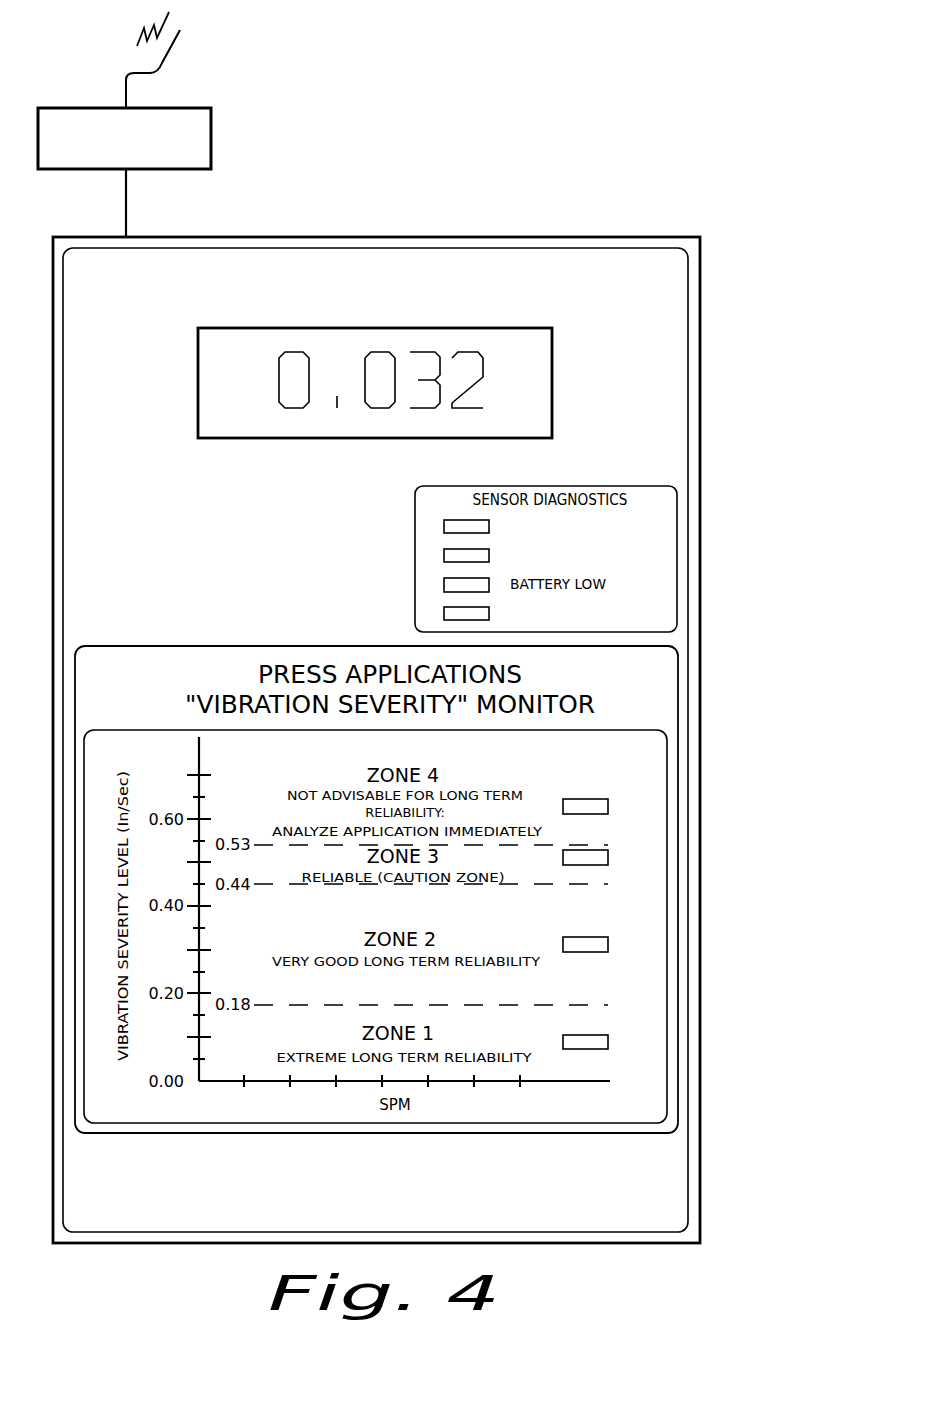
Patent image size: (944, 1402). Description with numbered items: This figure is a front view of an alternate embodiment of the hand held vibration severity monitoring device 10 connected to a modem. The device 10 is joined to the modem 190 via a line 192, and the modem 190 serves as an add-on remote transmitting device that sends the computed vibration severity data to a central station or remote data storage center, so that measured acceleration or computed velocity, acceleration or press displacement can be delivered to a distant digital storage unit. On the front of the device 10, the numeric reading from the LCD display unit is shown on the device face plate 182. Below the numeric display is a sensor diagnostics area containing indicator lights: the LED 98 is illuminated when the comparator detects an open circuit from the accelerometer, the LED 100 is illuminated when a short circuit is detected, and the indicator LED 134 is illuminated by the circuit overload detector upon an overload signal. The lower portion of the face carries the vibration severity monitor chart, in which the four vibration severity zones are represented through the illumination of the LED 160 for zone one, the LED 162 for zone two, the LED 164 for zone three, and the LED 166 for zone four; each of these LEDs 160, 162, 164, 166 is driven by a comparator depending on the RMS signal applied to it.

The hand held device 10 is at (625, 208).
The modem 190 is at (207, 132).
The line 192 is at (126, 202).
The device face plate 182 is at (545, 365).
The LED 100 is at (444, 528).
The LED 98 is at (444, 553).
The indicator LED 134 is at (444, 613).
The LED 160 is at (608, 1042).
The LED 162 is at (608, 945).
The LED 164 is at (608, 858).
The LED 166 is at (608, 807).